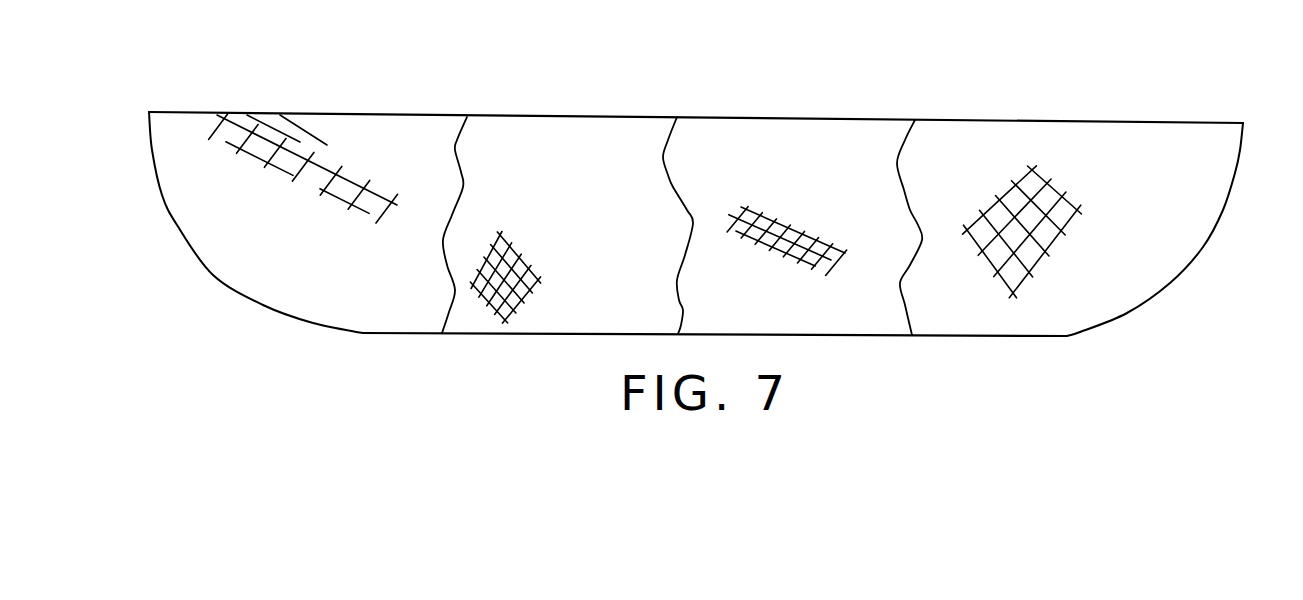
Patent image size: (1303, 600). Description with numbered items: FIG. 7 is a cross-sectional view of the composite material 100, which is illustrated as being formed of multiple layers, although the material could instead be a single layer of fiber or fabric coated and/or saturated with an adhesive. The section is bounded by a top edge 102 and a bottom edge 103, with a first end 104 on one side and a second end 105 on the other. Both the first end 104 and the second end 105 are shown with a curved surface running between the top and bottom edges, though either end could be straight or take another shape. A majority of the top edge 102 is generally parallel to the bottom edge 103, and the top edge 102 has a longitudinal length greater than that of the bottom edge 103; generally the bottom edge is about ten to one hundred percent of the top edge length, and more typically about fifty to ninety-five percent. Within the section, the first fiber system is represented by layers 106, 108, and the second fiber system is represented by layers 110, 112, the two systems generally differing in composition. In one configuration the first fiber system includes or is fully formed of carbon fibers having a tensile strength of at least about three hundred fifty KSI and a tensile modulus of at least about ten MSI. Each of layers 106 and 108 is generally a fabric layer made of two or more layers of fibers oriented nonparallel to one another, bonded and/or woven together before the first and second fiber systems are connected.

The composite material 100 is at (697, 224).
The top edge 102 is at (648, 117).
The bottom edge 103 is at (877, 338).
The first end 104 is at (153, 164).
The second end 105 is at (1235, 172).
The layer 106 is at (545, 143).
The layer 108 is at (798, 143).
The layer 110 is at (398, 150).
The layer 112 is at (1090, 142).